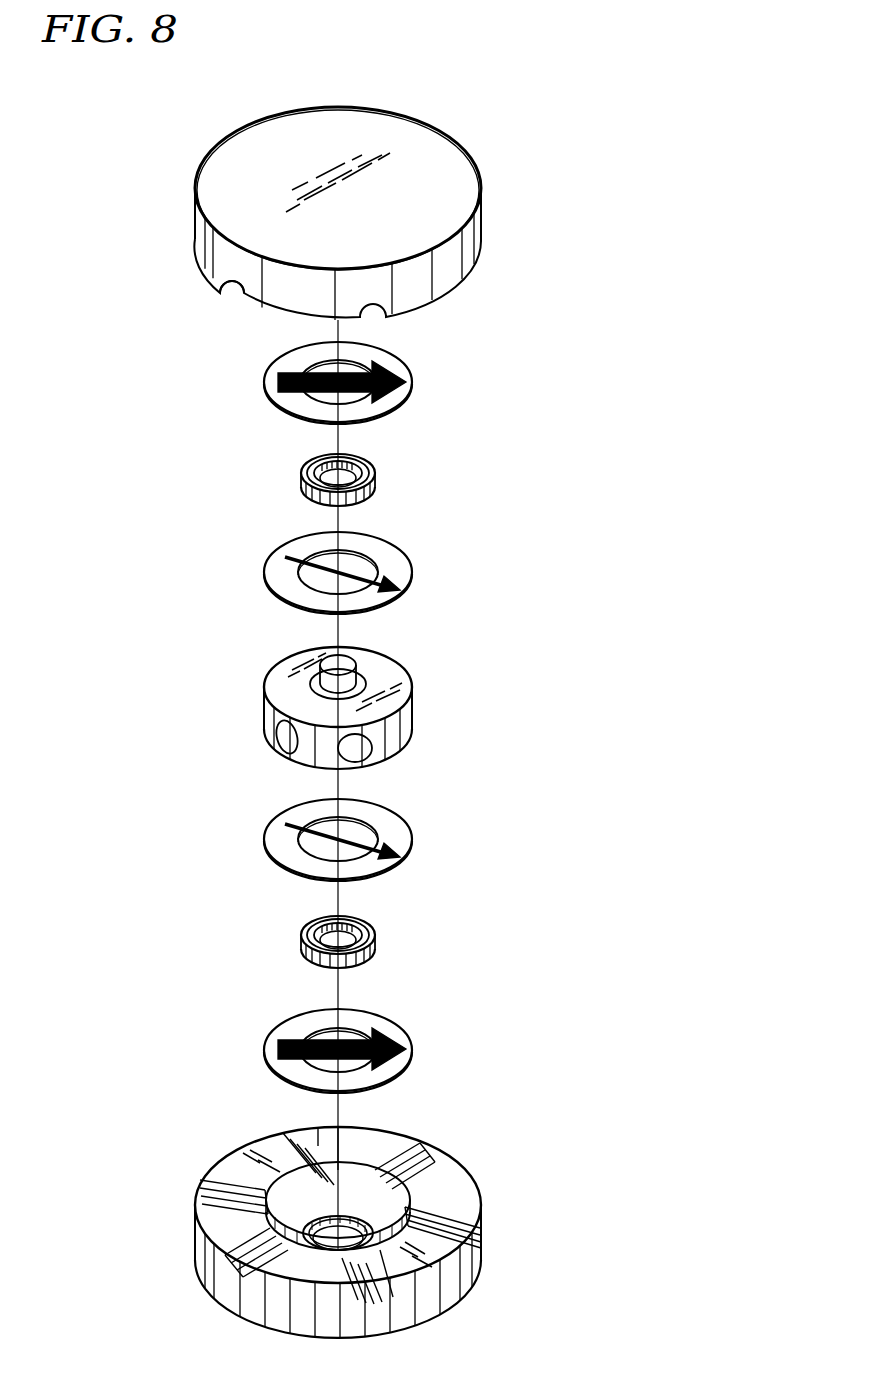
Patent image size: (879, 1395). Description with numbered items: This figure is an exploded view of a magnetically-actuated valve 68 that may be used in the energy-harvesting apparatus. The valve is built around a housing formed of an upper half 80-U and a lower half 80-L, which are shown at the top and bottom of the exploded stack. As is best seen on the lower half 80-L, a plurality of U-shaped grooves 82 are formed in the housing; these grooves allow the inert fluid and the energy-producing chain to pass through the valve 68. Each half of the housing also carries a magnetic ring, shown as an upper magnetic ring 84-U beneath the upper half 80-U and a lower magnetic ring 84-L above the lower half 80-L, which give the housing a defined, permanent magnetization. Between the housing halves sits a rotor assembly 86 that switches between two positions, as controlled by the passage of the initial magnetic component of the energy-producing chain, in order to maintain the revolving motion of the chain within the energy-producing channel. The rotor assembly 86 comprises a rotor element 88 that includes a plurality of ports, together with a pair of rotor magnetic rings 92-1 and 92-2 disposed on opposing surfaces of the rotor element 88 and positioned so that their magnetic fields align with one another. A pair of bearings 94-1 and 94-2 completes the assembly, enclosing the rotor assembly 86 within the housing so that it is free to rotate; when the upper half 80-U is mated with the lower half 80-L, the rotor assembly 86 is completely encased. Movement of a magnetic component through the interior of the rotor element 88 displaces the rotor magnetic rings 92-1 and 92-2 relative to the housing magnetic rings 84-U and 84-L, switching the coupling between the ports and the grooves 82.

The magnetically-actuated valve 68 is at (160, 116).
The upper half of housing 80-U is at (480, 218).
The U-shaped grooves 82 is at (232, 286).
The upper magnetic ring 84-U is at (412, 382).
The first bearing 94-1 is at (377, 480).
The rotor assembly 86 is at (220, 535).
The first rotor magnetic ring 92-1 is at (412, 574).
The rotor element 88 is at (412, 698).
The second rotor magnetic ring 92-2 is at (412, 841).
The second bearing 94-2 is at (377, 942).
The lower magnetic ring 84-L is at (264, 1050).
The lower half of housing 80-L is at (462, 1276).